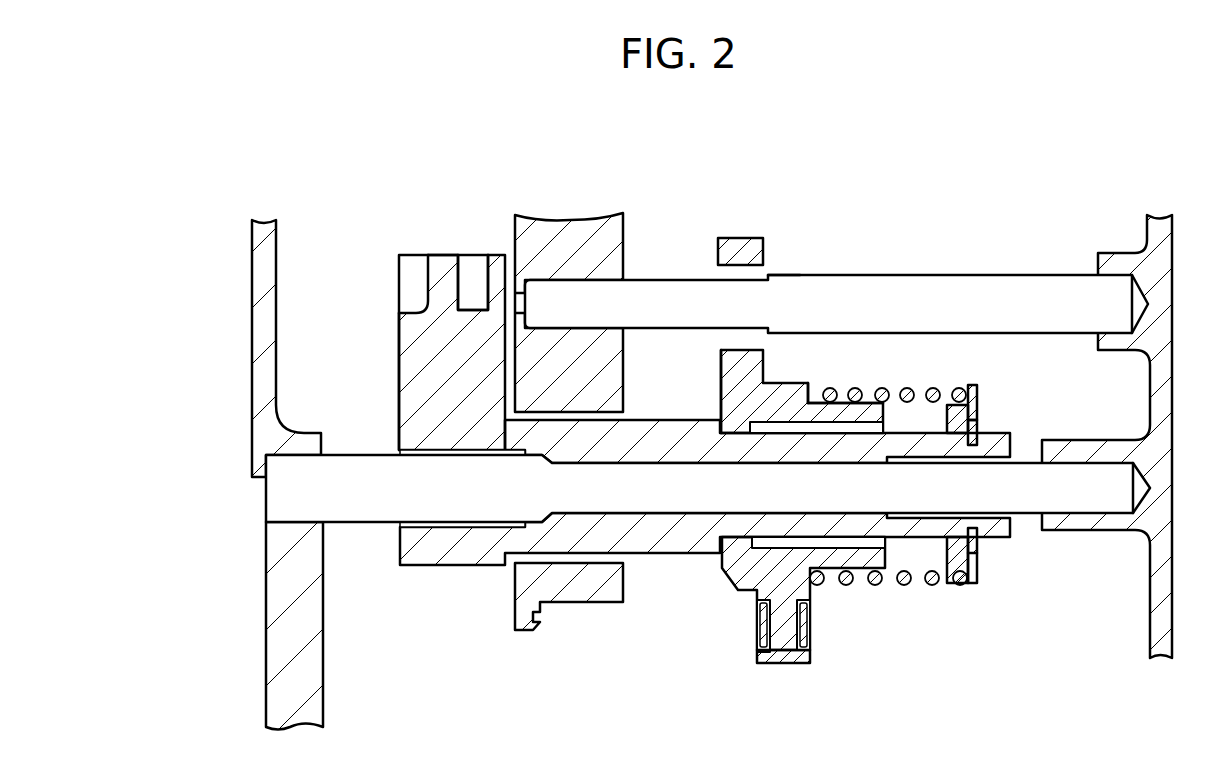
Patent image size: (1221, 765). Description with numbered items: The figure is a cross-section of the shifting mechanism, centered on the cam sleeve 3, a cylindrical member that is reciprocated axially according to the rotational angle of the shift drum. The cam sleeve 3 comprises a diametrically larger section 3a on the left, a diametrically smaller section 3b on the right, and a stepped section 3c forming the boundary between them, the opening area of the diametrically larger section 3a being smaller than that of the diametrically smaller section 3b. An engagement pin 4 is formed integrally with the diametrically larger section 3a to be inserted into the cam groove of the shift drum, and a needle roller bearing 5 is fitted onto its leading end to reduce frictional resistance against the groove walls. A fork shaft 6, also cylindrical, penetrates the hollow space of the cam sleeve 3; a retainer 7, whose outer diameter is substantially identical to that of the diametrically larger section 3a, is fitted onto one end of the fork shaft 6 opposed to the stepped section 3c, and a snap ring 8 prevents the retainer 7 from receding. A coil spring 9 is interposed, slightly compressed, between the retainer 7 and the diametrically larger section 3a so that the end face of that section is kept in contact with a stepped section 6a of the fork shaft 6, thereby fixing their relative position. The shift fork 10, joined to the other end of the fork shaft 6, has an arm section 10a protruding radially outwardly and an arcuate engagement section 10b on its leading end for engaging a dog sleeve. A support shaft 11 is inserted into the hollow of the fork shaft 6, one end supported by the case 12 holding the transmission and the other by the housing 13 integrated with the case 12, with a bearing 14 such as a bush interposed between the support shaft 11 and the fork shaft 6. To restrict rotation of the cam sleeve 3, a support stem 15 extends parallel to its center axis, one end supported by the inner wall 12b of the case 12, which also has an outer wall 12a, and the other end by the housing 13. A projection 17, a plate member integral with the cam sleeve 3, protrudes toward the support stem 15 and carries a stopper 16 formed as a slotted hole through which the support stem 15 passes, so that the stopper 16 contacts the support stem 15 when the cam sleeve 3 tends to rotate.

The cam sleeve 3 is at (813, 501).
The diametrically larger section 3a is at (792, 390).
The diametrically smaller section 3b is at (866, 407).
The stepped section 3c is at (822, 397).
The engagement pin 4 is at (757, 664).
The needle roller bearing 5 is at (812, 627).
The fork shaft 6 is at (1010, 540).
The stepped section 6a is at (724, 424).
The retainer 7 is at (970, 390).
The snap ring 8 is at (977, 428).
The coil spring 9 is at (932, 590).
The shift fork 10 is at (415, 317).
The arm section 10a is at (413, 405).
The arcuate engagement section 10b is at (443, 262).
The support shaft 11 is at (1022, 472).
The case 12 is at (274, 612).
The outer wall 12a is at (268, 333).
The inner wall 12b is at (573, 242).
The housing 13 is at (1162, 362).
The bearing 14 is at (400, 528).
The support stem 15 is at (1040, 290).
The stopper 16 is at (777, 250).
The projection 17 is at (741, 248).